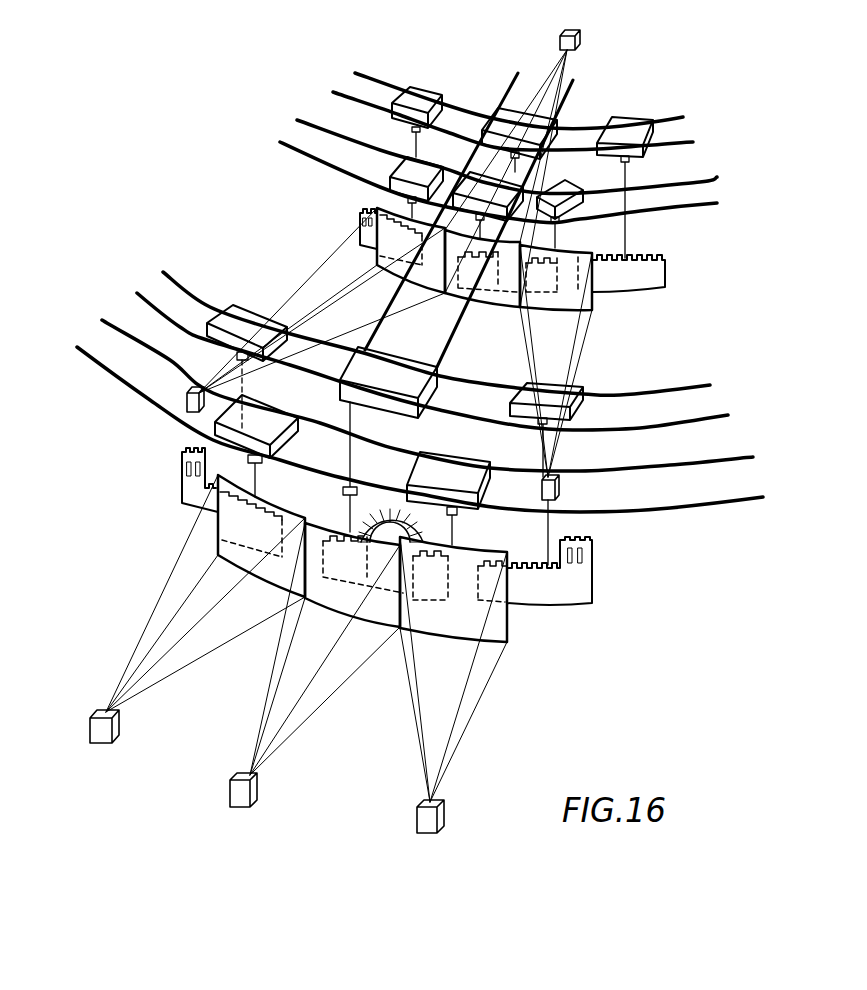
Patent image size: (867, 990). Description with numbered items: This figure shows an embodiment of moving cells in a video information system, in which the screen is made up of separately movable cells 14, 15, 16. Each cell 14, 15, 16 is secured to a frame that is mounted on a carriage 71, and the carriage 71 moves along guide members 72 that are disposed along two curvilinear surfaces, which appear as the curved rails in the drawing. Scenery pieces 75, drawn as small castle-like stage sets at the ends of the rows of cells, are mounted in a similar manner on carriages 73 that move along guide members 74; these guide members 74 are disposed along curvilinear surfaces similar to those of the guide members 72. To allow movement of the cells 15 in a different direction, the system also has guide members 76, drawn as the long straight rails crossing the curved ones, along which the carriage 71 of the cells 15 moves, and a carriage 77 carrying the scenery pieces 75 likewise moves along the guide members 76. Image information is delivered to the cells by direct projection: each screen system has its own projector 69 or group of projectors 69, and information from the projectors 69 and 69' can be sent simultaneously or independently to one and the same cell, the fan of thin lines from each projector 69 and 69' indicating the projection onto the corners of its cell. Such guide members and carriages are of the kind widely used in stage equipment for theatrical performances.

The cell 14 is at (402, 272).
The cell 15 is at (498, 300).
The cell 16 is at (565, 305).
The projector 69 is at (403, 260).
The projector 69' is at (298, 654).
The carriage 71 is at (571, 183).
The guide member 72 is at (716, 202).
The carriage 73 is at (418, 98).
The guide member 74 is at (690, 140).
The scenery piece 75 is at (358, 216).
The guide member 76 is at (456, 337).
The carriage 77 is at (500, 112).